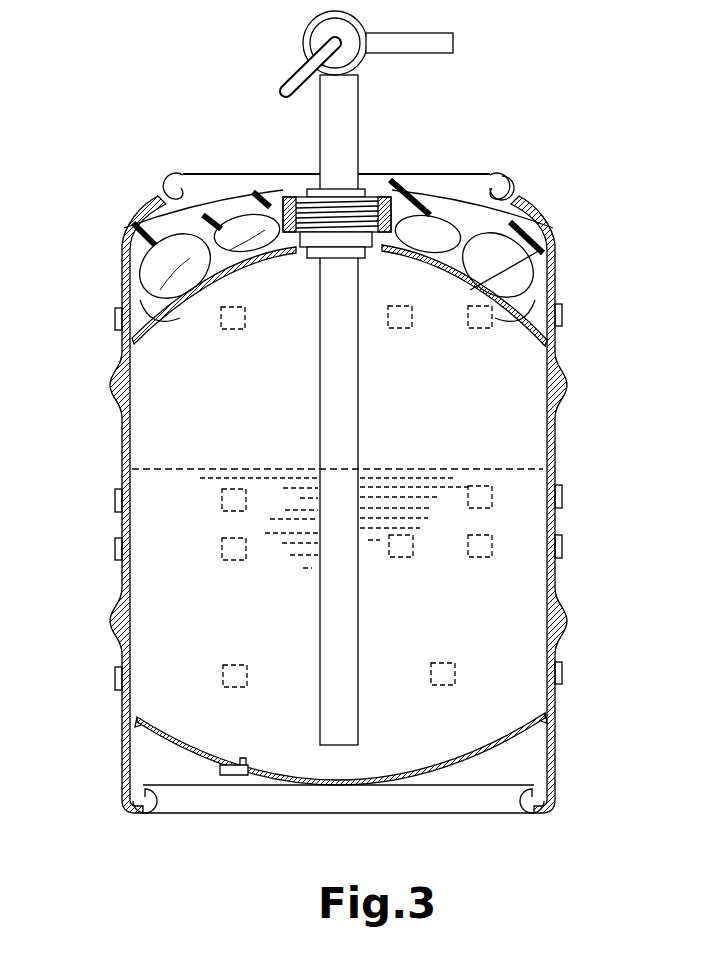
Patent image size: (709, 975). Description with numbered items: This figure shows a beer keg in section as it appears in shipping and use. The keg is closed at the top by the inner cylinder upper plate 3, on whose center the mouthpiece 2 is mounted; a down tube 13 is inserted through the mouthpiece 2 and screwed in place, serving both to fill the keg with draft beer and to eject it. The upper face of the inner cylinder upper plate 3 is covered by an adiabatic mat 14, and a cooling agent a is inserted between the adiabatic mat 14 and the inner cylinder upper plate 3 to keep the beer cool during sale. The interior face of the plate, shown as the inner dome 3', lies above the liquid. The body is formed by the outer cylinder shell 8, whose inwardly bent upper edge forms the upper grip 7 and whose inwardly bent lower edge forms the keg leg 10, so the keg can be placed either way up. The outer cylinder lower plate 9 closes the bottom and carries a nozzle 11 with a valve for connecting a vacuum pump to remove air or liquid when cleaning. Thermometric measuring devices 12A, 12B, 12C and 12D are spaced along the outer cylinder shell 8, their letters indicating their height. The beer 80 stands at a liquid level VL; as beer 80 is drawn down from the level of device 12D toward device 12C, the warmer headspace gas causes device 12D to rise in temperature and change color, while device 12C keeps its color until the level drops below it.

The mouthpiece 2 is at (367, 196).
The inner cylinder upper plate 3 is at (369, 247).
The inner lid dome 3' is at (296, 300).
The upper grip 7 is at (506, 176).
The outer cylinder shell 8 is at (557, 432).
The outer cylinder lower plate 9 is at (517, 735).
The keg leg 10 is at (545, 815).
The nozzle 11 is at (232, 776).
The thermometric measuring device 12A is at (128, 672).
The thermometric measuring device 12B is at (128, 545).
The thermometric measuring device 12C is at (222, 497).
The thermometric measuring device 12D is at (607, 323).
The down tube 13 is at (330, 438).
The adiabatic mat 14 is at (277, 186).
The beer 80 is at (275, 466).
The cooling agent a is at (238, 225).
The liquid level VL is at (557, 512).